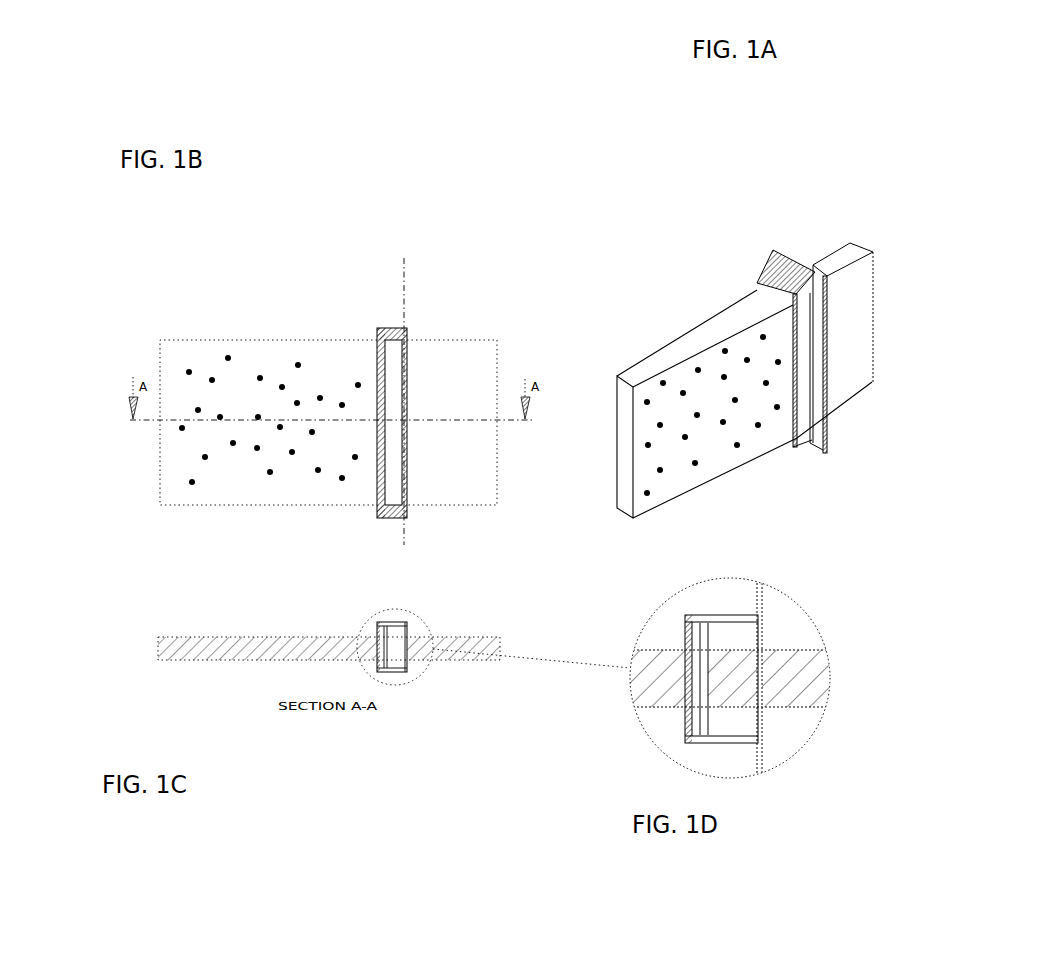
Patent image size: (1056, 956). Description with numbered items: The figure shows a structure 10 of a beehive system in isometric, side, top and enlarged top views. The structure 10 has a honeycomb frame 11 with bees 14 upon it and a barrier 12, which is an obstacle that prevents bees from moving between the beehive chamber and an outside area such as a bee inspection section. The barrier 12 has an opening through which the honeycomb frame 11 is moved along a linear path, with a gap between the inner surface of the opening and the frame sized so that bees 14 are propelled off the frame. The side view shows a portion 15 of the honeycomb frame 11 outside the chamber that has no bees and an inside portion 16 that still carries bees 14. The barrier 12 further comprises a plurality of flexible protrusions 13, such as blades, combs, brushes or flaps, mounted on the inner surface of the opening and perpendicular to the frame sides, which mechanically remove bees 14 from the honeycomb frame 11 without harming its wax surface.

In FIG. 1A, the structure 10 is at (838, 192).
In FIG. 1A, the honeycomb frame 11 is at (858, 315).
In FIG. 1A, the barrier 12 is at (813, 345).
In FIG. 1A, the protrusions 13 is at (793, 382).
In FIG. 1D, the protrusions 13 is at (692, 644).
In FIG. 1A, the bees 14 is at (708, 440).
In FIG. 1B, the bees 14 is at (270, 420).
In FIG. 1B, the portion of honeycomb frame 15 is at (450, 320).
In FIG. 1B, the inside portion 16 is at (253, 318).